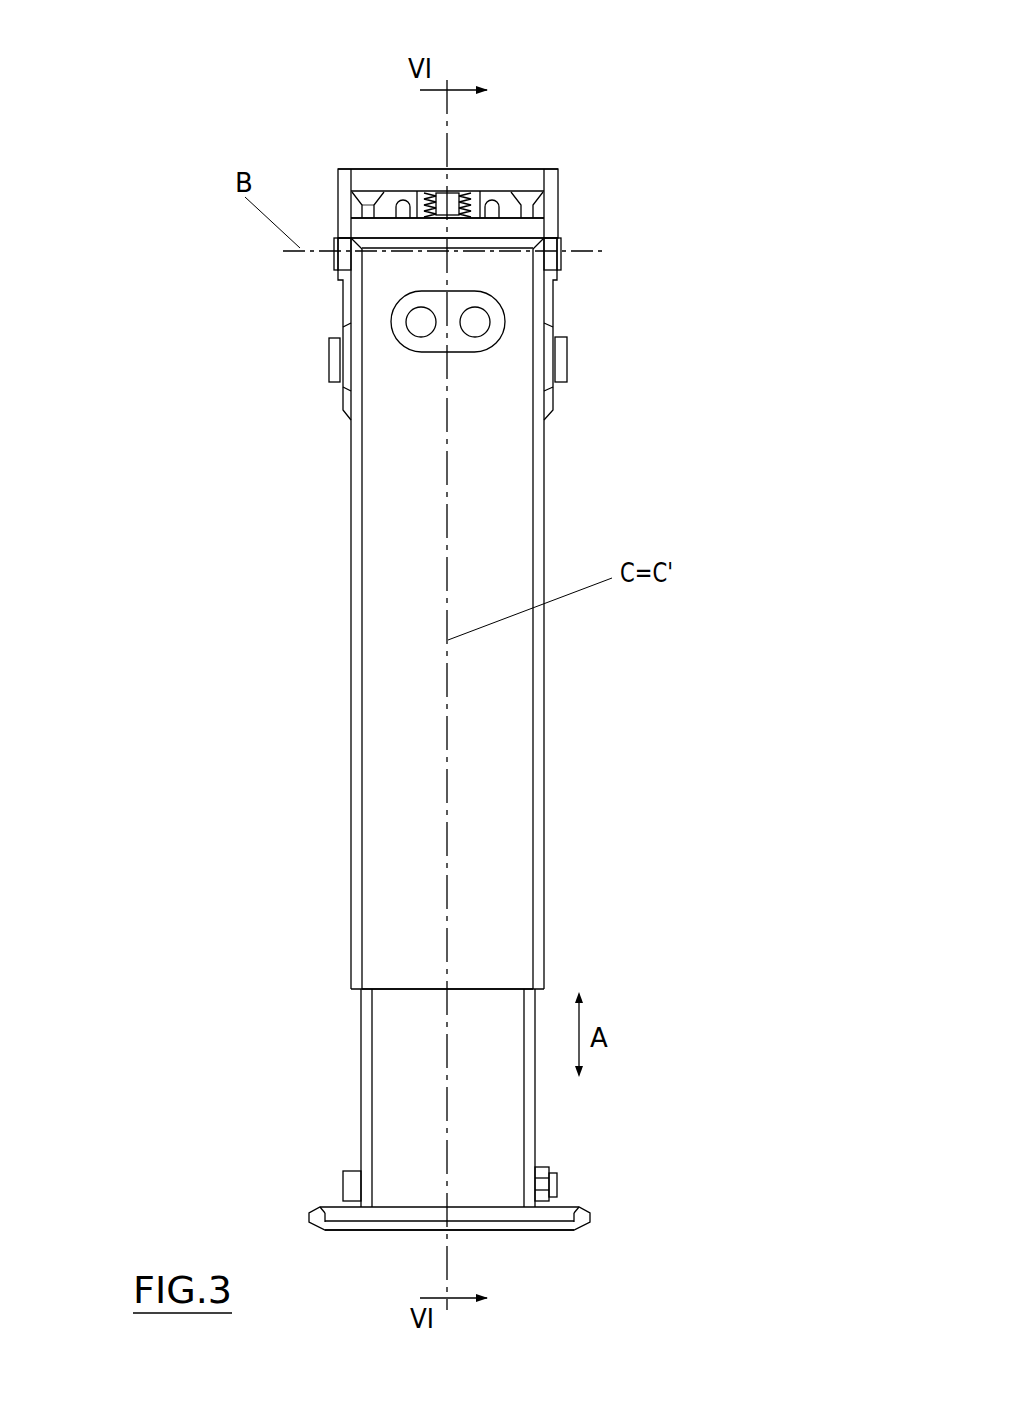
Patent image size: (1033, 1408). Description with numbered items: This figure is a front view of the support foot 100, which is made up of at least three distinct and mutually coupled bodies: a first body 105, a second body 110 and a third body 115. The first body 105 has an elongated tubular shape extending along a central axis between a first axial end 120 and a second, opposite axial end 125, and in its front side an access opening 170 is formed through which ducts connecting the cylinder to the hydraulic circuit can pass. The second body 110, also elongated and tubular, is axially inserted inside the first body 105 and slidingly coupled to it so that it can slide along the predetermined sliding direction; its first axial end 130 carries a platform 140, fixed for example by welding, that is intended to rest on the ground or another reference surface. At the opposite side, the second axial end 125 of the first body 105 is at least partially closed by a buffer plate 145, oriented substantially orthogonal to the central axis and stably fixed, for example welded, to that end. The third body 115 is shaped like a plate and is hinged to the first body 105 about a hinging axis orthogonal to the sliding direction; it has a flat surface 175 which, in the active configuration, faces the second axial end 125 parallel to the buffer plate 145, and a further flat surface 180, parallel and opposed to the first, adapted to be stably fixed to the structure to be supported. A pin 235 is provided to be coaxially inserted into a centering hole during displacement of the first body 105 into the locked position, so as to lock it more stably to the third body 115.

The support foot 100 is at (306, 150).
The first body 105 is at (513, 750).
The second body 110 is at (500, 1077).
The third body 115 is at (520, 178).
The first axial end 120 is at (386, 990).
The second axial end 125 is at (385, 210).
The first axial end 130 is at (504, 1233).
The platform 140 is at (414, 1225).
The buffer plate 145 is at (525, 228).
The access opening 170 is at (415, 352).
The flat surface 175 is at (413, 190).
The further flat surface 180 is at (492, 165).
The pin 235 is at (455, 195).